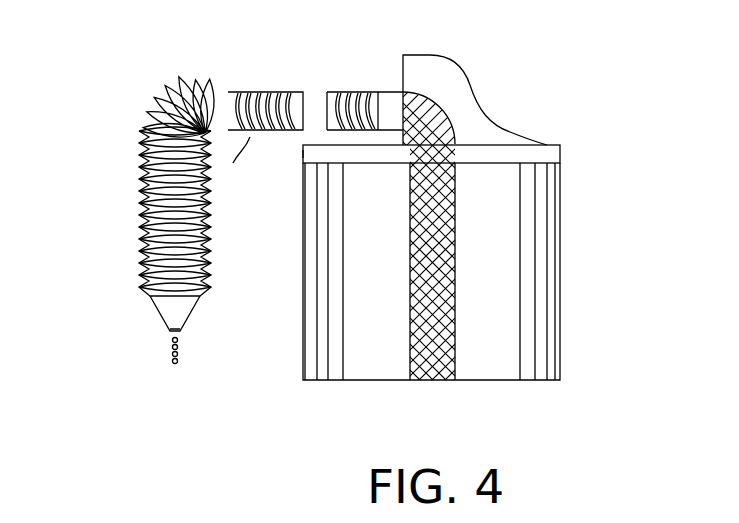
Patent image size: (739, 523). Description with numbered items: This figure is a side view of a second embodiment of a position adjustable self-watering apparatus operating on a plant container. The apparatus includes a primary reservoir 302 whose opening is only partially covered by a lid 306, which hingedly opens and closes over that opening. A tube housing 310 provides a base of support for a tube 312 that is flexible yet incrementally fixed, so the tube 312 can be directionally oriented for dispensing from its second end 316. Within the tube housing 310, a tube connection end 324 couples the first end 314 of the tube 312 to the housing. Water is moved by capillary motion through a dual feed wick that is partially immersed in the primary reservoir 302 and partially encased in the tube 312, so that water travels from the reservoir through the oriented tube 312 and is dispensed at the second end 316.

The primary reservoir 302 is at (537, 215).
The lid 306 is at (302, 153).
The tube housing 310 is at (433, 55).
The tube 312 is at (173, 92).
The first end 314 is at (265, 92).
The second end 316 is at (165, 322).
The tube connection end 324 is at (350, 92).